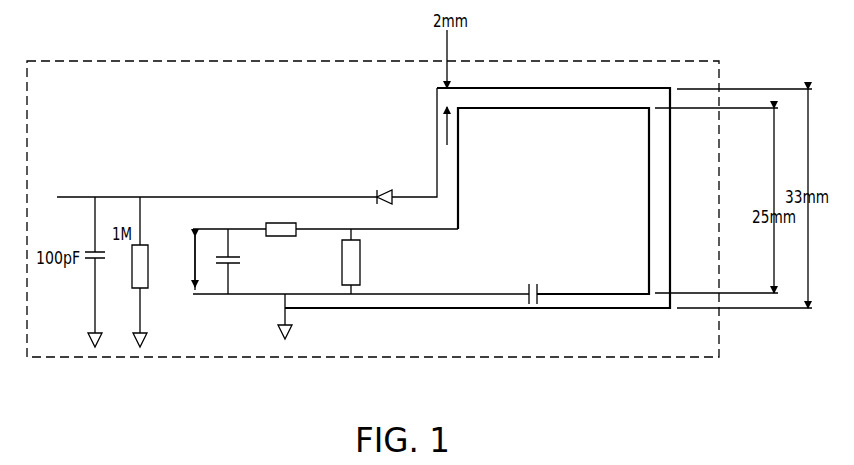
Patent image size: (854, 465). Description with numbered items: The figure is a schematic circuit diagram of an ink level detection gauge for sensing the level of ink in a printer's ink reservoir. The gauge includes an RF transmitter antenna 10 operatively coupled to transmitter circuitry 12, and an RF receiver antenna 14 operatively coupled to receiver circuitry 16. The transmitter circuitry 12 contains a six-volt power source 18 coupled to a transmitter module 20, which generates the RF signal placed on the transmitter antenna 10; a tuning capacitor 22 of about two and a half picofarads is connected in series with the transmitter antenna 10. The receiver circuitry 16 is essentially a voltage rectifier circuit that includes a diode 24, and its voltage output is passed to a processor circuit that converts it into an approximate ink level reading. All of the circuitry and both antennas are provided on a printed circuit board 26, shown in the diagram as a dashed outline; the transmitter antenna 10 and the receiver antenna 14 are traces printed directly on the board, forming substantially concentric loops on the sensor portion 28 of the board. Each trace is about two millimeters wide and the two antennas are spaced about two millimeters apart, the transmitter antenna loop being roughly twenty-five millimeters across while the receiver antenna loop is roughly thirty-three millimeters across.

The RF transmitter antenna 10 is at (533, 108).
The transmitter circuitry 12 is at (455, 243).
The RF receiver antenna 14 is at (575, 88).
The receiver circuitry 16 is at (196, 190).
The six-volt power source 18 is at (212, 305).
The transmitter module 20 is at (342, 262).
The tuning capacitor 22 is at (540, 288).
The diode 24 is at (387, 188).
The printed circuit board 26 is at (212, 61).
The sensor portion 28 is at (536, 318).